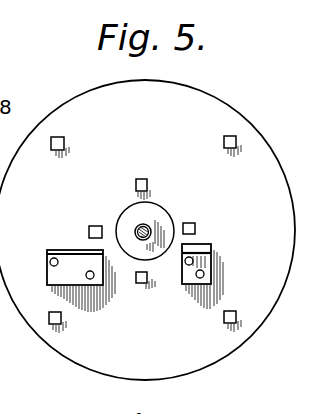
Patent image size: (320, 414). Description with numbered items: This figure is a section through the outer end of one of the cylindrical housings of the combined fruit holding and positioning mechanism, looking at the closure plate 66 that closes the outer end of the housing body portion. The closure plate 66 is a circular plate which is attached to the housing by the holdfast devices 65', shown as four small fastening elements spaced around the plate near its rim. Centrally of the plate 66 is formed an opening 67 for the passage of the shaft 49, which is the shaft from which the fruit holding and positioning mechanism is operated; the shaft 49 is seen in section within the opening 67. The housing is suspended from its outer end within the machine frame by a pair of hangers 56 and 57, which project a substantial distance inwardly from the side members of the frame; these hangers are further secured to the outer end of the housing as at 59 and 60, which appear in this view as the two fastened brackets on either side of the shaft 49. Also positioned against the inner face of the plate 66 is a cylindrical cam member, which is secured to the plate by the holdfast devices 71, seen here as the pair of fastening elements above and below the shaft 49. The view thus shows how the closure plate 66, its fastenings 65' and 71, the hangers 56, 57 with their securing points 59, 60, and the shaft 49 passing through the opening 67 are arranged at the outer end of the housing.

The shaft 49 is at (150, 221).
The hanger 56 is at (77, 237).
The hanger 57 is at (205, 246).
The securing point of hanger to housing 59 is at (55, 277).
The securing point of hanger to housing 60 is at (204, 274).
The holdfast devices 65' is at (142, 230).
The closure plate 66 is at (147, 230).
The opening 67 is at (163, 218).
The holdfast devices 71 is at (145, 173).